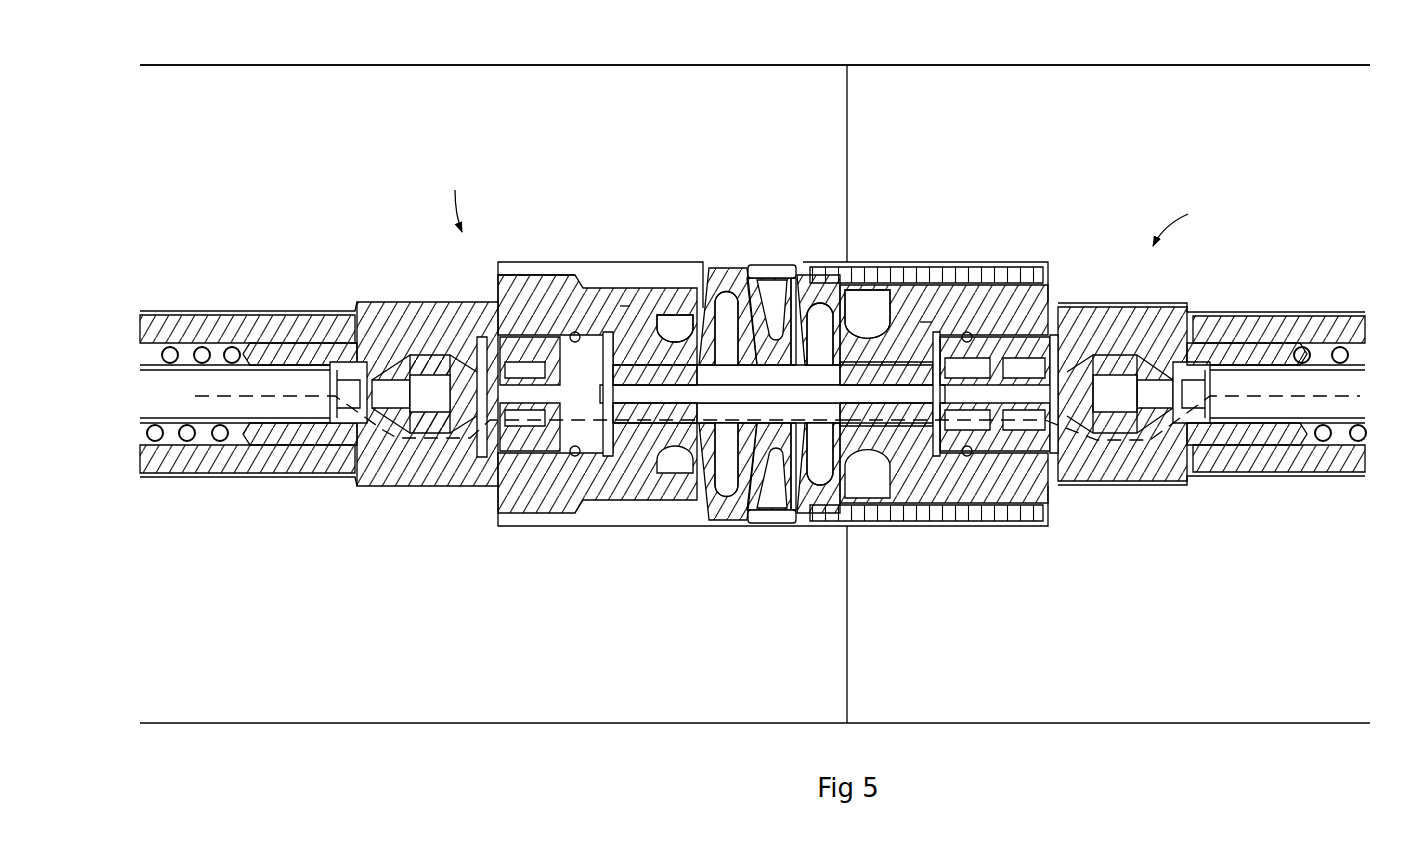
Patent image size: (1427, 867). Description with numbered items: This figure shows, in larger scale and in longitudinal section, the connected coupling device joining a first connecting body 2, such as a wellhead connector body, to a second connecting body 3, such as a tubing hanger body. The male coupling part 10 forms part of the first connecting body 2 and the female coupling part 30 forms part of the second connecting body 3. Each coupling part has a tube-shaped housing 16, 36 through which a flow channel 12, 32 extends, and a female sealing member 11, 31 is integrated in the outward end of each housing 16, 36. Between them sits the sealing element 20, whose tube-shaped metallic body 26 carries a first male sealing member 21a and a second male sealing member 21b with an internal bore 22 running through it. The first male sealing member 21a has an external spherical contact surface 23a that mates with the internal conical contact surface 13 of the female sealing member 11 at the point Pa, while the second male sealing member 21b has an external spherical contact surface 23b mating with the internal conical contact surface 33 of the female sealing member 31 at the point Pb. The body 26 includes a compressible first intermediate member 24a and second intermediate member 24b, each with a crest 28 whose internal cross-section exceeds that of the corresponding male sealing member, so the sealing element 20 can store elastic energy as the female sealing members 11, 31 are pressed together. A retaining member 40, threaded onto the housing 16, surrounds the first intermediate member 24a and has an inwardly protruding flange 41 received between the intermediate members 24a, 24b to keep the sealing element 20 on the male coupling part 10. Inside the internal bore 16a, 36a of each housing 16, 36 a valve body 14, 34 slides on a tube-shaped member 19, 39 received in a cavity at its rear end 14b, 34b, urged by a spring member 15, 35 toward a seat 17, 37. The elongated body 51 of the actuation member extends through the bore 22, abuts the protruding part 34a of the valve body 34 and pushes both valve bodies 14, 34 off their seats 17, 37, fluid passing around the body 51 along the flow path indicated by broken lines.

The first connecting body 2 is at (1085, 66).
The second connecting body 3 is at (590, 66).
The male coupling part 10 is at (1185, 215).
The female sealing member 11 is at (957, 262).
The flow channel 12 is at (1289, 370).
The internal conical contact surface 13 is at (940, 456).
The valve body 14 is at (1110, 438).
The rear end of valve body 14b is at (1262, 446).
The spring member 15 is at (1356, 442).
The tube-shaped housing 16 is at (1246, 330).
The internal bore 16a is at (1357, 346).
The seat 17 is at (1010, 462).
The tube-shaped member 19 is at (1330, 367).
The sealing element 20 is at (732, 268).
The first male sealing member 21a is at (898, 320).
The second male sealing member 21b is at (598, 306).
The internal bore 22 is at (866, 300).
The external spherical contact surface 23a is at (897, 450).
The external spherical contact surface 23b is at (648, 500).
The first intermediate member 24a is at (790, 527).
The second intermediate member 24b is at (710, 506).
The tube-shaped metallic body 26 is at (765, 266).
The crest 28 is at (830, 478).
The female coupling part 30 is at (452, 195).
The female sealing member 31 is at (652, 302).
The flow channel 32 is at (243, 378).
The internal conical contact surface 33 is at (607, 500).
The valve body 34 is at (434, 432).
The protruding part 34a is at (537, 300).
The rear end of valve body 34b is at (323, 346).
The spring member 35 is at (190, 442).
The tube-shaped housing 36 is at (222, 328).
The internal bore 36a is at (153, 343).
The seat 37 is at (506, 506).
The tube-shaped member 39 is at (205, 373).
The retaining member 40 is at (840, 262).
The inwardly protruding flange 41 is at (788, 522).
The elongated body 51 is at (570, 286).
The engagement point of first male sealing member Pa is at (926, 320).
The engagement point of second male sealing member Pb is at (621, 306).